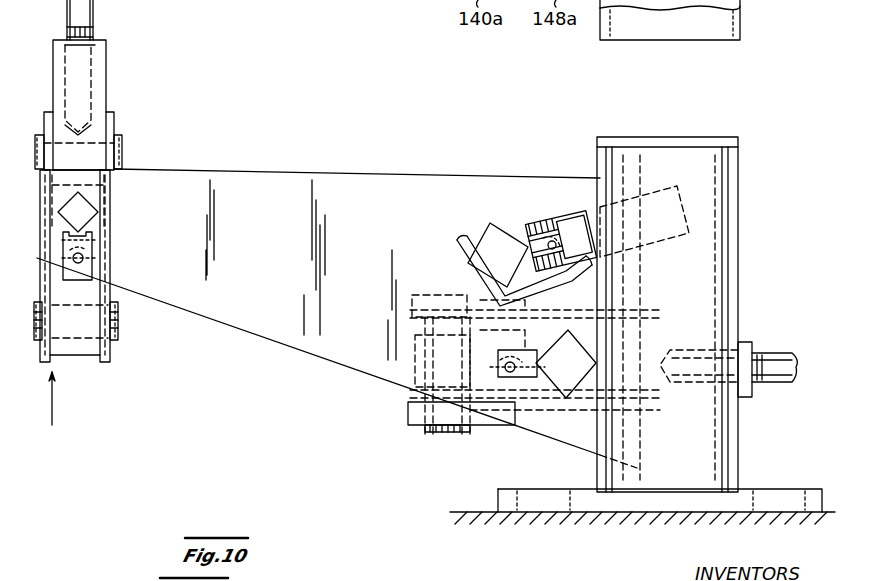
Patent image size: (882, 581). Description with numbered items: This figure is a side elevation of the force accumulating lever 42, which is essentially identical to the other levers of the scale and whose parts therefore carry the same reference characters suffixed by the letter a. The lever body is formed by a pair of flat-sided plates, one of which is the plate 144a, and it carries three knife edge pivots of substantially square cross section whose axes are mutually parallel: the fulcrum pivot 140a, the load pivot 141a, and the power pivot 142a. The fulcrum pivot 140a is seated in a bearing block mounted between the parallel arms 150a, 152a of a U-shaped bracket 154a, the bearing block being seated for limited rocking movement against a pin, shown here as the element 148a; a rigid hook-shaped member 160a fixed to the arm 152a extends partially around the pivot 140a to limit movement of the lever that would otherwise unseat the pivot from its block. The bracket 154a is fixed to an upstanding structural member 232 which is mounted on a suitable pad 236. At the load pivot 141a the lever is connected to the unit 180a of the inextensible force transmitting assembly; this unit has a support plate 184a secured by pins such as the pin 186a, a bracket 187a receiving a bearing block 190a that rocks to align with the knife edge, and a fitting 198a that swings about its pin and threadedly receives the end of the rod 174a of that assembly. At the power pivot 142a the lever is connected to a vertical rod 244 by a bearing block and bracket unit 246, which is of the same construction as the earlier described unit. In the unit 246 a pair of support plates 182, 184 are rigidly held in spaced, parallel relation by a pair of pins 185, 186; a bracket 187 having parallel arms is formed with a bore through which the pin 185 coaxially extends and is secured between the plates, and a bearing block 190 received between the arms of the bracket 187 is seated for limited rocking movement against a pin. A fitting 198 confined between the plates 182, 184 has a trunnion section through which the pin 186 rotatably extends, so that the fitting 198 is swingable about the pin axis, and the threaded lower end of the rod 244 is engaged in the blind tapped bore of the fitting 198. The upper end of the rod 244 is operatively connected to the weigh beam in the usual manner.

The vertical rod 244 is at (83, 16).
The fitting 198 is at (107, 69).
The pin 185 is at (123, 150).
The support plate 184 is at (45, 361).
The support plate 182 is at (114, 361).
The bracket 187 is at (82, 358).
The pin 186 is at (118, 331).
The power knife edge pivot 142a is at (88, 212).
The bearing block 190 is at (95, 238).
The bearing block and bracket unit 246 is at (55, 405).
The flat-sided plate 144a is at (278, 276).
The lever 42 is at (226, 336).
The hook-shaped member 160a is at (460, 248).
The fulcrum knife edge pivot 140a is at (516, 225).
The arm 150a is at (575, 207).
The clamp pin 148a is at (536, 228).
The arm 152a is at (556, 273).
The U-shaped bracket 154a is at (600, 201).
The upstanding structural member 232 is at (733, 452).
The unit 180a is at (750, 336).
The shaft 174a is at (772, 382).
The fitting 198a is at (737, 398).
The pad 236 is at (750, 490).
The bracket 187a is at (415, 360).
The support plate 184a is at (409, 420).
The pin 186a is at (436, 433).
The bearing block 190a is at (522, 380).
The load knife edge pivot 141a is at (560, 395).